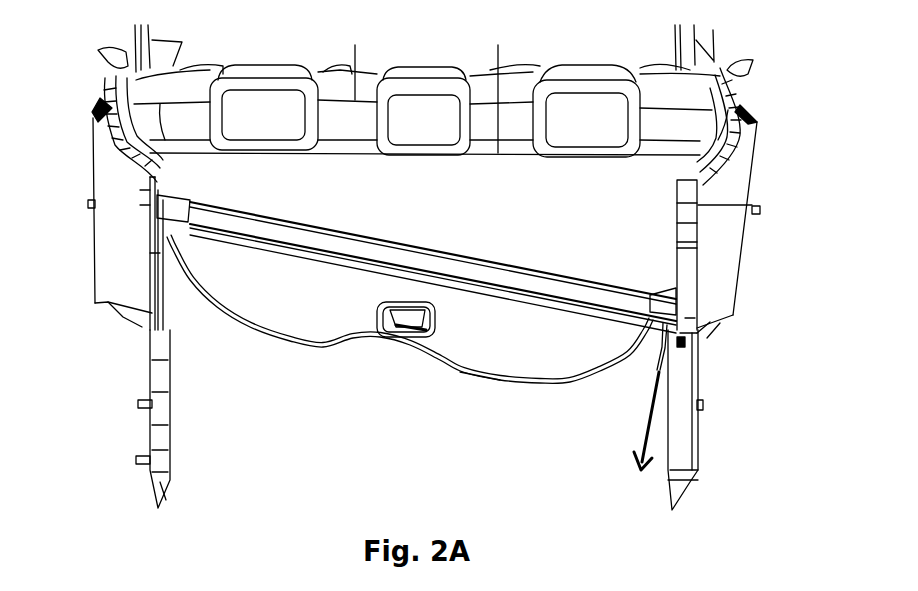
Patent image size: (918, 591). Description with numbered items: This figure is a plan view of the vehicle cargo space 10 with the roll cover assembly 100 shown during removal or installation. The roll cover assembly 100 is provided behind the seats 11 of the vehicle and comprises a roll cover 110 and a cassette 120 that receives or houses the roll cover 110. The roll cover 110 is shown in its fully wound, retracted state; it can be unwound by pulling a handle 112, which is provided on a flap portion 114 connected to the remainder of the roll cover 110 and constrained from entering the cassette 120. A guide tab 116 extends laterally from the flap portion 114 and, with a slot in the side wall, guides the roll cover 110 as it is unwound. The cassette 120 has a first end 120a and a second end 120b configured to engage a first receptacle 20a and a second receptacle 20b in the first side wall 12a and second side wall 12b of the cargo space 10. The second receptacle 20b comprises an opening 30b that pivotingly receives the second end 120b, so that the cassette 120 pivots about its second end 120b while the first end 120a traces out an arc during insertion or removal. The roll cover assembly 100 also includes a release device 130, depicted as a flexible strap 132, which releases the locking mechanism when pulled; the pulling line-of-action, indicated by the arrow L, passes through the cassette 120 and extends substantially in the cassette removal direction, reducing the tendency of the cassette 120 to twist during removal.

The cargo space 10 is at (177, 415).
The seats 11 is at (370, 82).
The first side wall 12a is at (677, 202).
The second side wall 12b is at (163, 297).
The first receptacle 20a is at (683, 222).
The second receptacle 20b is at (148, 212).
The opening 30b is at (146, 204).
The roll cover assembly 100 is at (285, 352).
The roll cover 110 is at (322, 332).
The handle 112 is at (397, 324).
The flap portion 114 is at (505, 357).
The guide tab 116 is at (152, 255).
The cassette 120 is at (423, 258).
The first end 120a is at (665, 305).
The second end 120b is at (170, 210).
The release device 130 is at (650, 413).
The strap 132 is at (721, 420).